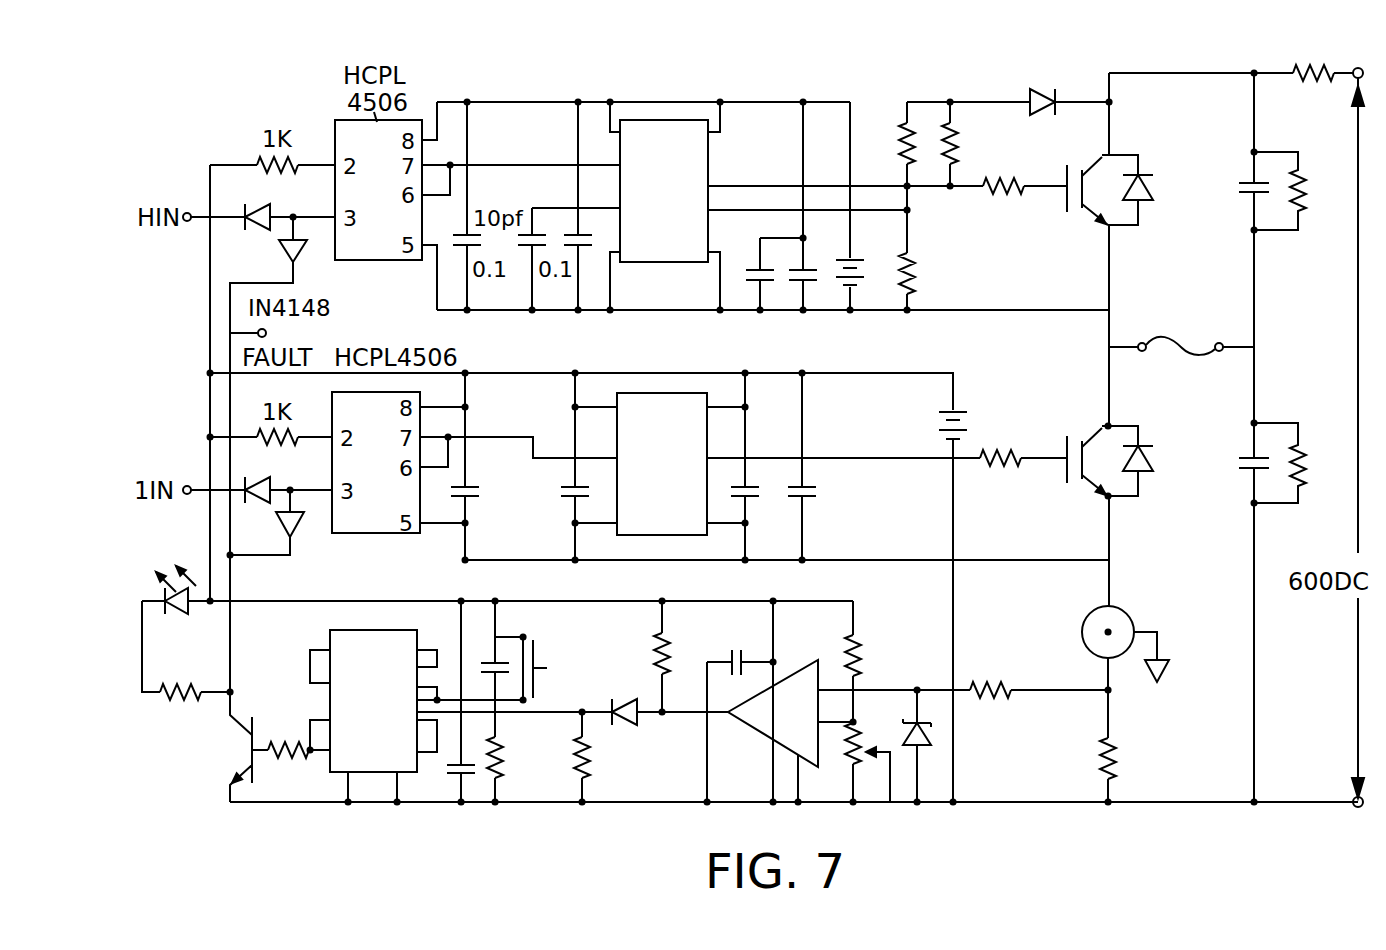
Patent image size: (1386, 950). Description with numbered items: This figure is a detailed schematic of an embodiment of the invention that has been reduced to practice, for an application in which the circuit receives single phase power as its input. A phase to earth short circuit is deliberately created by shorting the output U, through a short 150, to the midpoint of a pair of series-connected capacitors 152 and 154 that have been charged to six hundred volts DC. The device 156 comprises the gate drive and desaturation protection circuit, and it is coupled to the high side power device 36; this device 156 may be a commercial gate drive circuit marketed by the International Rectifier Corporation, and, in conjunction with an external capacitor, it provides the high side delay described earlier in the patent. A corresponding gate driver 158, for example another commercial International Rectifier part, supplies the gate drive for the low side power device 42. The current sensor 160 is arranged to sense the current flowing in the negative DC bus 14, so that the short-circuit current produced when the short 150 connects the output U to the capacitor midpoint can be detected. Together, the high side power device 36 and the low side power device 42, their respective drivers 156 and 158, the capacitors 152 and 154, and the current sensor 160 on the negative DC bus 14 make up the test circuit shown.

The negative DC bus 14 is at (1194, 806).
The high side power device 36 is at (1098, 164).
The low side power device 42 is at (1096, 435).
The short 150 is at (1186, 328).
The capacitor 152 is at (1246, 190).
The capacitor 154 is at (1243, 470).
The gate drive and desaturation protection circuit device 156 is at (677, 120).
The gate driver 158 is at (653, 402).
The current sensor 160 is at (1082, 632).